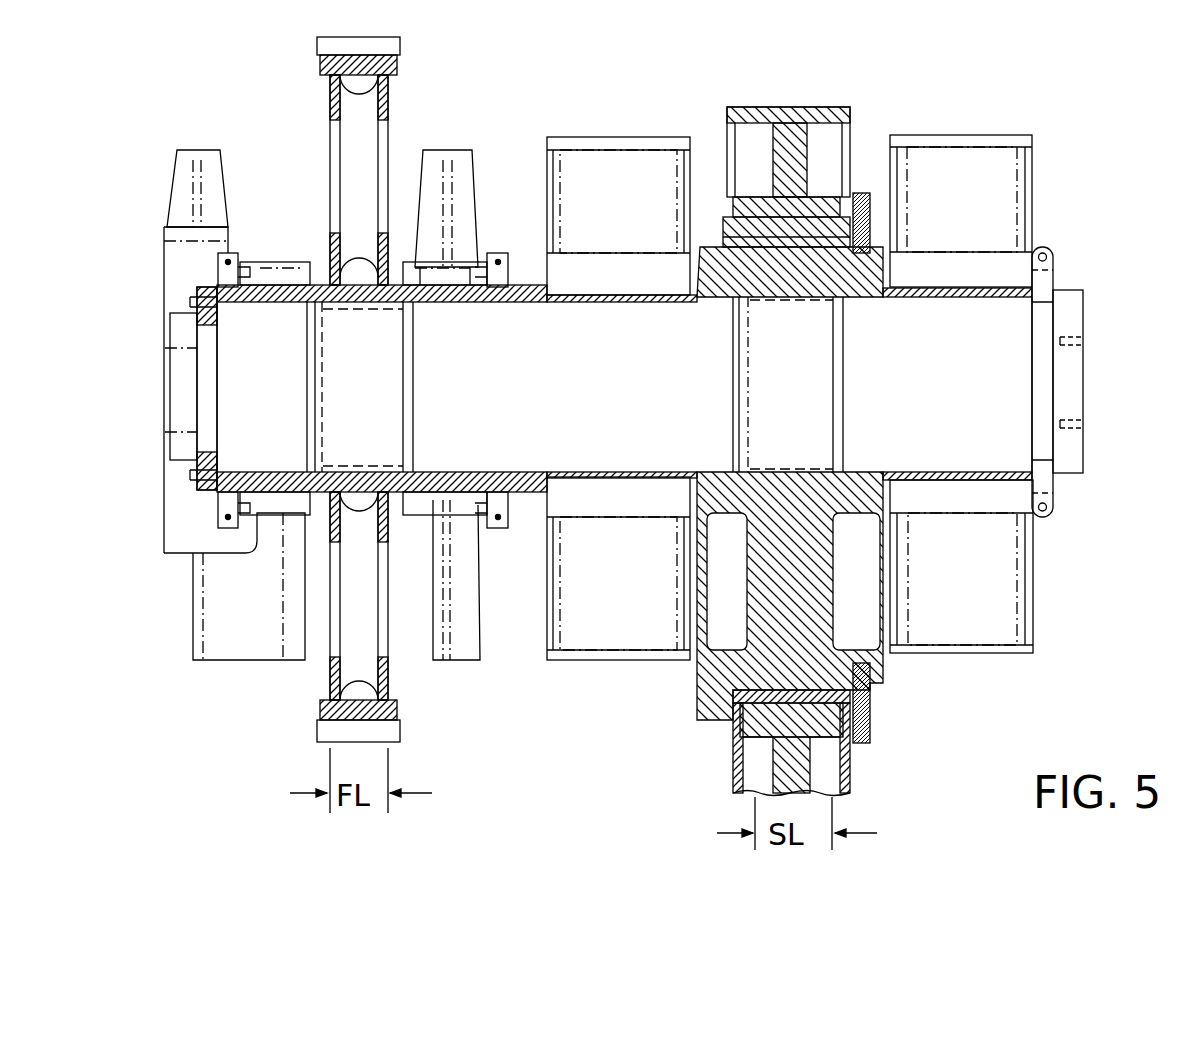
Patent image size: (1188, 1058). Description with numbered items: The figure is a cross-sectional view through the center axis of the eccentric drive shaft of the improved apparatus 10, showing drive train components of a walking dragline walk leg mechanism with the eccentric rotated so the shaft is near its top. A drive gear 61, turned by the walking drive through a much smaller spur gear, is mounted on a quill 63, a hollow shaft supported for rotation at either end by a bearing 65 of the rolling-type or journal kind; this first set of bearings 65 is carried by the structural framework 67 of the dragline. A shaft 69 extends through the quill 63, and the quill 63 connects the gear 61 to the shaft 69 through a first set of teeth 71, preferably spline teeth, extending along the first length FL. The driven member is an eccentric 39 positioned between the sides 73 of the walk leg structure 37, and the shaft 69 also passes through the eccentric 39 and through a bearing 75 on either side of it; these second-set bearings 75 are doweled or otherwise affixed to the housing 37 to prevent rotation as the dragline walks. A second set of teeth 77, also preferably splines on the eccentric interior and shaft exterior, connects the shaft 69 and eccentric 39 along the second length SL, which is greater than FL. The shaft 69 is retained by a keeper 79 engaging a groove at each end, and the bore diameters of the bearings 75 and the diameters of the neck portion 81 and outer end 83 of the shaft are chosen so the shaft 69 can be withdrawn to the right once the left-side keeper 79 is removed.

The improved apparatus 10 is at (531, 112).
The walk leg structure 37 is at (550, 690).
The eccentric 39 is at (702, 678).
The drive gear 61 is at (390, 100).
The quill 63 is at (323, 280).
The bearing 65 is at (263, 268).
The structural framework 67 is at (195, 150).
The shaft 69 is at (528, 453).
The first set of teeth 71 is at (380, 307).
The sides of the walk leg structure 73 is at (620, 137).
The bearing 75 is at (637, 303).
The second set of teeth 77 is at (813, 297).
The keeper 79 is at (1053, 280).
The neck portion 81 is at (617, 453).
The outer end 83 is at (957, 450).